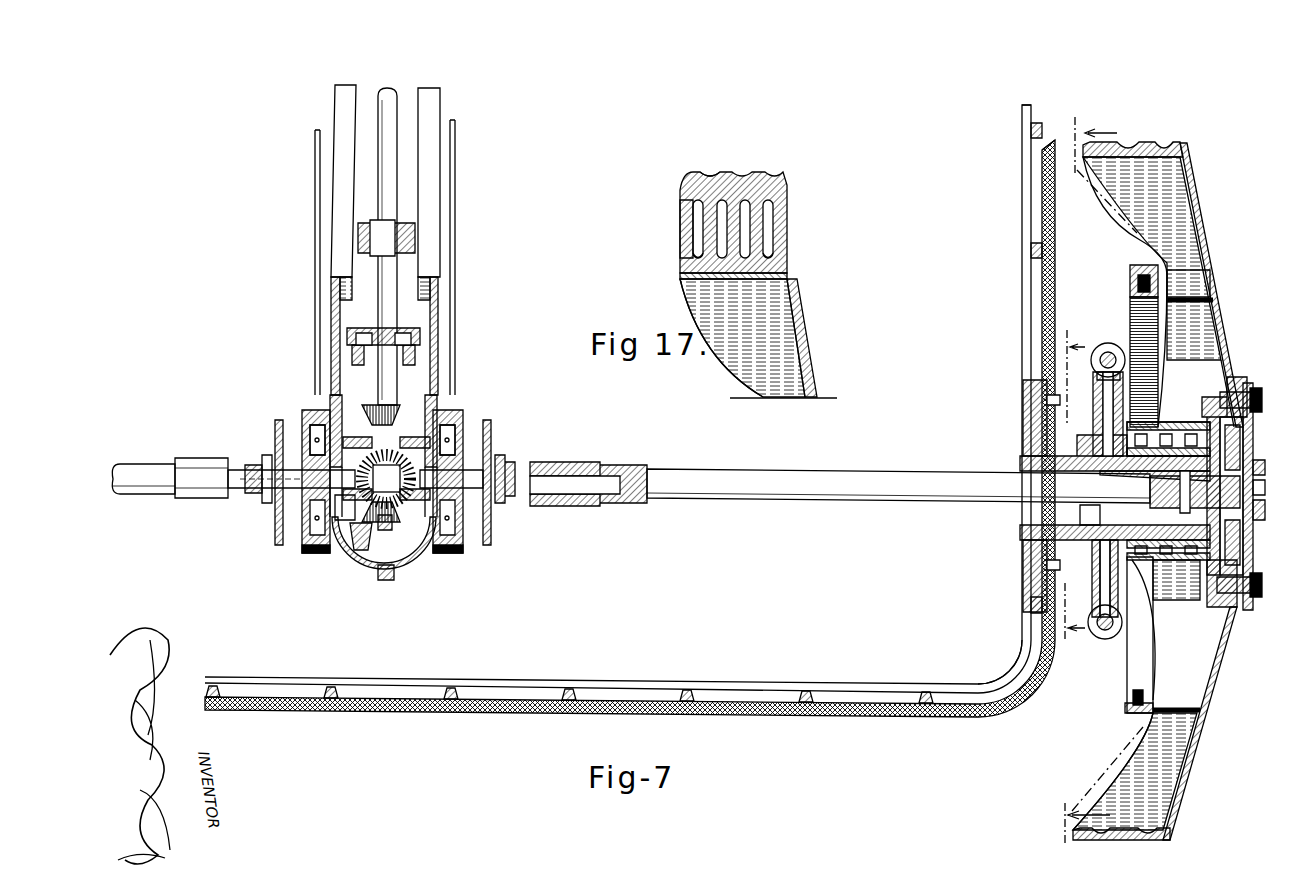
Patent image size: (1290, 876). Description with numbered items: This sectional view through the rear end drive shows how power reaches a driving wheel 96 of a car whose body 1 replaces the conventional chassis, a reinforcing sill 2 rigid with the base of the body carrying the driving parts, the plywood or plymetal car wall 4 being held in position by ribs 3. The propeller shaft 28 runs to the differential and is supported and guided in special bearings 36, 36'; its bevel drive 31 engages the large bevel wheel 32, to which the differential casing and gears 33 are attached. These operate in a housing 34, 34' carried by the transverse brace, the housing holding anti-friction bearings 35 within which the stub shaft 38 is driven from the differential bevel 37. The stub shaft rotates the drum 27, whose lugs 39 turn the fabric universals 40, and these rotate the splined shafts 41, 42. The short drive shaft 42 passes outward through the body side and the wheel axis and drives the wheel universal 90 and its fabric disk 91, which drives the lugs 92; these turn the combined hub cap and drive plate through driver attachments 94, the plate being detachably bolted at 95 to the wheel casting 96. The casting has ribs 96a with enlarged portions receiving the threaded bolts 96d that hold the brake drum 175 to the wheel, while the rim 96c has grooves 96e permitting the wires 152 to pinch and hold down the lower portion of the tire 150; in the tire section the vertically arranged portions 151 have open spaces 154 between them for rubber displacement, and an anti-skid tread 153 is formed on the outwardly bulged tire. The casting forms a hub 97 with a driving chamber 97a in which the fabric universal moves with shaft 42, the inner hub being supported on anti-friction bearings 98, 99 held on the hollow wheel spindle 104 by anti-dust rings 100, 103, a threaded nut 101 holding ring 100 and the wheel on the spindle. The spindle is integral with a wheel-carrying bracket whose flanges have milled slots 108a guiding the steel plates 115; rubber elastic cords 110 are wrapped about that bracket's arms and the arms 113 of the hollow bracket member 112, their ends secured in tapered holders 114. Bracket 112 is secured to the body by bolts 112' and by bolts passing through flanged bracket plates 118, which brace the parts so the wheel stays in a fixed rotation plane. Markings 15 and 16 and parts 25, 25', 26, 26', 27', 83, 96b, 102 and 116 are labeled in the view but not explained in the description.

In FIG. 7, the body 1 is at (1030, 690).
In FIG. 7, the reinforcing strip or sill 2 is at (1022, 288).
In FIG. 7, the ribs 3 is at (945, 712).
In FIG. 7, the car wall 4 is at (1043, 676).
In FIG. 7, the section line 15 is at (1083, 476).
In FIG. 7, the section line 16 is at (1068, 489).
In FIG. 7, the tube 25 is at (309, 240).
In FIG. 7, the tube 25' is at (464, 241).
In FIG. 7, the bearing 26 is at (293, 405).
In FIG. 7, the bearing 26' is at (473, 414).
In FIG. 7, the drum 27 is at (285, 465).
In FIG. 7, the flange 27' is at (489, 473).
In FIG. 7, the propeller shaft 28 is at (398, 157).
In FIG. 7, the bevel drive 31 is at (437, 385).
In FIG. 7, the large bevel wheel 32 is at (370, 572).
In FIG. 7, the differential casing and gears 33 is at (405, 545).
In FIG. 7, the housing 34 is at (339, 464).
In FIG. 7, the housing 34' is at (423, 480).
In FIG. 7, the anti-friction bearings 35 is at (305, 553).
In FIG. 7, the special bearing 36 is at (424, 325).
In FIG. 7, the special bearing 36' is at (428, 224).
In FIG. 7, the differential bevel 37 is at (338, 522).
In FIG. 7, the stub shaft 38 is at (305, 478).
In FIG. 7, the lugs 39 is at (279, 545).
In FIG. 7, the fabric universals 40 is at (260, 505).
In FIG. 7, the splined shaft 41 is at (565, 465).
In FIG. 7, the splined drive shaft 42 is at (728, 470).
In FIG. 7, the nut 83 is at (1259, 476).
In FIG. 7, the wheel universal 90 is at (1259, 495).
In FIG. 7, the fabric disk 91 is at (1259, 518).
In FIG. 7, the lugs 92 is at (1251, 585).
In FIG. 7, the driver attachments 94 is at (1255, 450).
In FIG. 7, the bolts 95 is at (1258, 388).
In FIG. 7, the wheel casting 96 is at (1218, 326).
In FIG. 17, the wheel casting 96 is at (808, 356).
In FIG. 7, the ribs 96a is at (1205, 308).
In FIG. 17, the ribs 96a is at (740, 348).
In FIG. 7, the hub recess 96b is at (1190, 252).
In FIG. 7, the rim 96c is at (1130, 142).
In FIG. 7, the threaded bolts 96d is at (1138, 280).
In FIG. 7, the grooves 96e is at (1164, 142).
In FIG. 17, the grooves 96e is at (780, 280).
In FIG. 7, the hub 97 is at (1208, 405).
In FIG. 7, the driving chamber 97a is at (1214, 610).
In FIG. 7, the anti-friction bearing 98 is at (1150, 422).
In FIG. 7, the anti-friction bearing 99 is at (1166, 422).
In FIG. 7, the anti-dust ring 100 is at (1200, 422).
In FIG. 7, the threaded nut 101 is at (1195, 562).
In FIG. 7, the roller 102 is at (1172, 562).
In FIG. 7, the anti-dust ring 103 is at (1144, 630).
In FIG. 7, the hollow wheel spindle 104 is at (1160, 480).
In FIG. 7, the milled slots 108a is at (1115, 476).
In FIG. 7, the rubber elastic cords 110 is at (1095, 395).
In FIG. 7, the hollow bracket member 112 is at (1092, 527).
In FIG. 7, the bolts 112' is at (1087, 453).
In FIG. 7, the arms 113 is at (1098, 376).
In FIG. 7, the tapered holders 114 is at (1108, 343).
In FIG. 7, the steel plates 115 is at (1090, 503).
In FIG. 7, the block 116 is at (1098, 570).
In FIG. 7, the flanged bracket plates 118 is at (1023, 406).
In FIG. 17, the tire 150 is at (787, 228).
In FIG. 17, the vertically arranged tire portions 151 is at (770, 222).
In FIG. 17, the wires 152 is at (693, 245).
In FIG. 17, the anti-skid tread 153 is at (722, 172).
In FIG. 17, the open spaces 154 is at (698, 218).
In FIG. 7, the brake drum 175 is at (1142, 266).